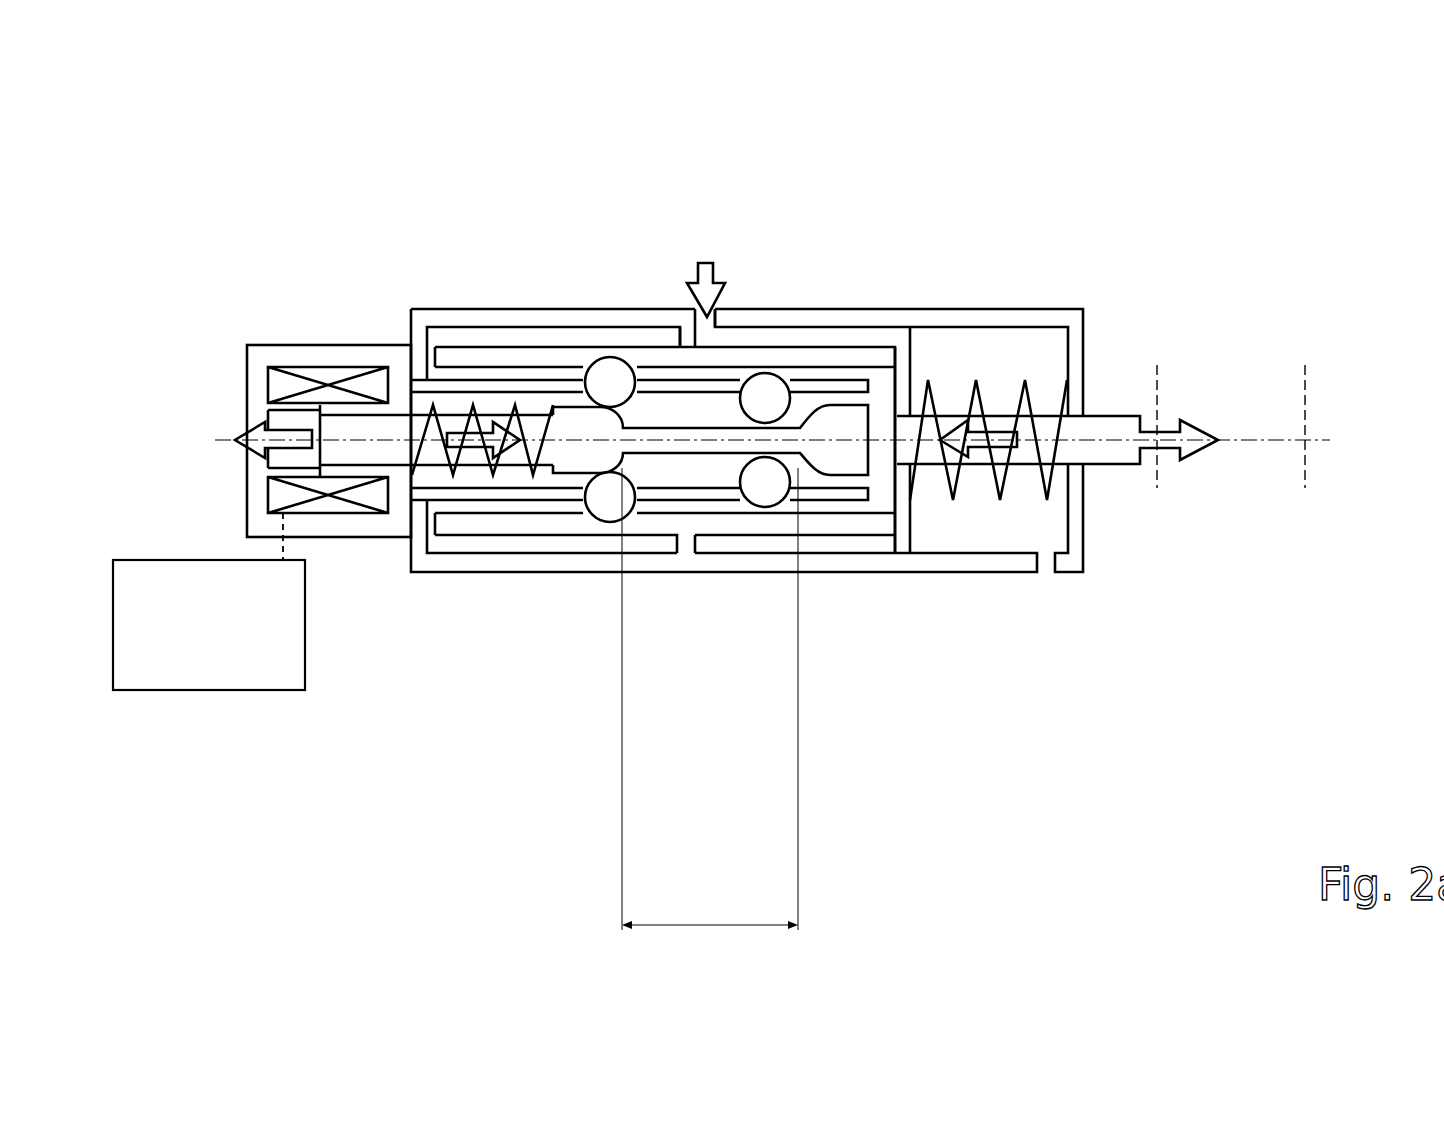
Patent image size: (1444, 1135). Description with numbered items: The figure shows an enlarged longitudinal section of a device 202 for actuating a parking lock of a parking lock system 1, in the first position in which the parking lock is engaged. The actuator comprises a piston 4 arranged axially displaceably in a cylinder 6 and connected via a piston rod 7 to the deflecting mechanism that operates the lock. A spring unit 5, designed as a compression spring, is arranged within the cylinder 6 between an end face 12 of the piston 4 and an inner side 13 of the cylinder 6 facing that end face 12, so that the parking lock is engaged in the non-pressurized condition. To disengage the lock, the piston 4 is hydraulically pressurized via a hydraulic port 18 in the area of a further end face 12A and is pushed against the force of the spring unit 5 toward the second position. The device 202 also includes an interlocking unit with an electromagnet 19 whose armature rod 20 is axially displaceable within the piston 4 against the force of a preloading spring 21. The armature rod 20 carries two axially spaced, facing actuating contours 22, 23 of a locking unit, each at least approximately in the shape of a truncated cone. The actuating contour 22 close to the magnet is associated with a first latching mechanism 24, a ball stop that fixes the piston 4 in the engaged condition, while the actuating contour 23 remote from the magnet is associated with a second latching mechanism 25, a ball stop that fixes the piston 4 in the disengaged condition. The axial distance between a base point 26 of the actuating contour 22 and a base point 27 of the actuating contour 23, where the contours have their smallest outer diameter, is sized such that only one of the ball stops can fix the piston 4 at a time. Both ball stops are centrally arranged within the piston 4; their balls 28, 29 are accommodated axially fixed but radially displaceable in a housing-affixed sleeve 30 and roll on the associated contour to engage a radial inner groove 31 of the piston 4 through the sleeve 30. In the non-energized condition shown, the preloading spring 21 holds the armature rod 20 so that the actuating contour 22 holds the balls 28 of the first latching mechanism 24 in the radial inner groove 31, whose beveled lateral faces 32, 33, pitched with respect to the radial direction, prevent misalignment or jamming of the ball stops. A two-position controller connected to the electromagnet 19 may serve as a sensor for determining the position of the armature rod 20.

The parking lock system 1 is at (401, 195).
The piston 4 is at (787, 355).
The spring unit 5 is at (1030, 397).
The cylinder 6 is at (1007, 563).
The piston rod 7 is at (1100, 425).
The end face 12 is at (910, 370).
The further end face 12A is at (895, 340).
The inner side 13 is at (1063, 522).
The hydraulic port 18 is at (707, 325).
The electromagnet 19 is at (292, 360).
The armature rod 20 is at (353, 428).
The preloading spring 21 is at (417, 477).
The actuating contour close to the magnet 22 is at (618, 452).
The actuating contour remote from the magnet 23 is at (830, 535).
The first latching mechanism 24 is at (583, 521).
The second latching mechanism 25 is at (785, 518).
The base point 26 is at (625, 465).
The base point 27 is at (807, 522).
The balls 28 is at (610, 497).
The balls 29 is at (760, 482).
The sleeve 30 is at (478, 495).
The radial inner groove 31 is at (597, 347).
The lateral face 32 is at (603, 353).
The lateral face 33 is at (613, 357).
The device 202 is at (1035, 255).